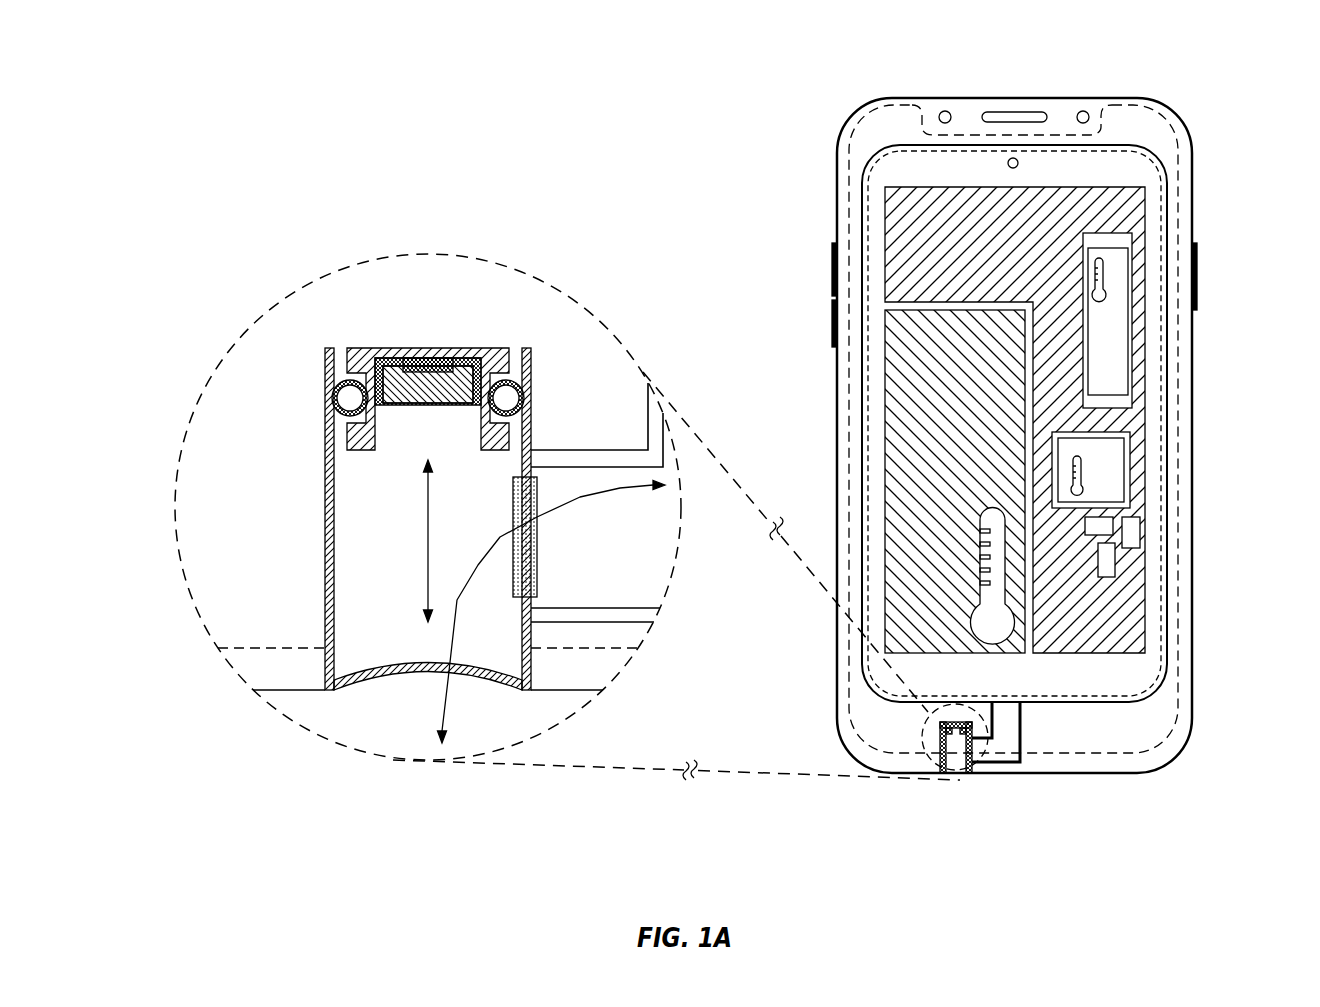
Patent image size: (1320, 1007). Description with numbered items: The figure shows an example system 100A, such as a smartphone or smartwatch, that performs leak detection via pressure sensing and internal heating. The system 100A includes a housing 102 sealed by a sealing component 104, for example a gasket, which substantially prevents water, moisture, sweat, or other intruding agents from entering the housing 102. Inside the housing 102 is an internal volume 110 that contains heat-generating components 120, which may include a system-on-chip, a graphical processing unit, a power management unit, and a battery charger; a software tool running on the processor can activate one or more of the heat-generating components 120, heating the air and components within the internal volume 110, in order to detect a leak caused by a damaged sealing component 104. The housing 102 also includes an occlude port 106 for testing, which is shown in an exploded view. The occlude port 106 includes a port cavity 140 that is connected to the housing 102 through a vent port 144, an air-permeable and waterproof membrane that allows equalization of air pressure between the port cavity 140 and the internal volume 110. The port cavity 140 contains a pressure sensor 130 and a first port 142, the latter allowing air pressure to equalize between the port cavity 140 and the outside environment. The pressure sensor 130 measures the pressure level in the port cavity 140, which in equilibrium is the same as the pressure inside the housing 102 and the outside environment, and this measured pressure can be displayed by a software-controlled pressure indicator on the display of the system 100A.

The system 100A is at (242, 32).
The housing 102 is at (1185, 113).
The sealing component 104 is at (846, 152).
The occlude port 106 is at (255, 323).
The internal volume 110 is at (1008, 163).
The heat-generating components 120 is at (1051, 452).
The pressure sensor 130 is at (425, 336).
The port cavity 140 is at (385, 549).
The first port 142 is at (427, 686).
The vent port 144 is at (538, 532).